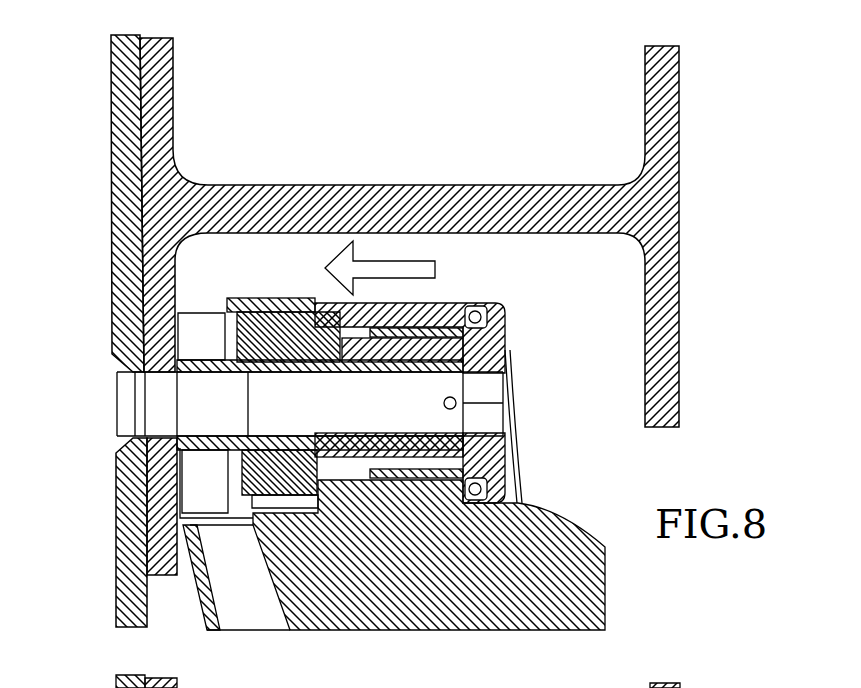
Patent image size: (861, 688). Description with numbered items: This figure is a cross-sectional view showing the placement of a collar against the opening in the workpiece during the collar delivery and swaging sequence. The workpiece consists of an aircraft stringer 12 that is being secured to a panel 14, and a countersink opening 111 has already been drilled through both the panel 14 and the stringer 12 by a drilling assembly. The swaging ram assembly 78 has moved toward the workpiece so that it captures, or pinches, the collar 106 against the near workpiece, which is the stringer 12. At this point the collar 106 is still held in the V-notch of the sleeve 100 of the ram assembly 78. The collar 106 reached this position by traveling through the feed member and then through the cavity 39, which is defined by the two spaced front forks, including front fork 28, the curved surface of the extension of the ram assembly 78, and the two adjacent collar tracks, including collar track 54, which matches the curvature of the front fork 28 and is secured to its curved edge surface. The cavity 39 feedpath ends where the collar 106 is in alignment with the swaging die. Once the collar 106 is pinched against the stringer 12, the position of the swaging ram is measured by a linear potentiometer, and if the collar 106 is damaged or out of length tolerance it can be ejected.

The panel 14 is at (110, 140).
The aircraft stringer 12 is at (441, 195).
The collar 106 is at (205, 355).
The sleeve 100 is at (285, 298).
The swaging ram assembly 78 is at (482, 280).
The countersink opening 111 is at (135, 403).
The front fork 28 is at (572, 530).
The collar track 54 is at (197, 600).
The cavity 39 is at (258, 612).